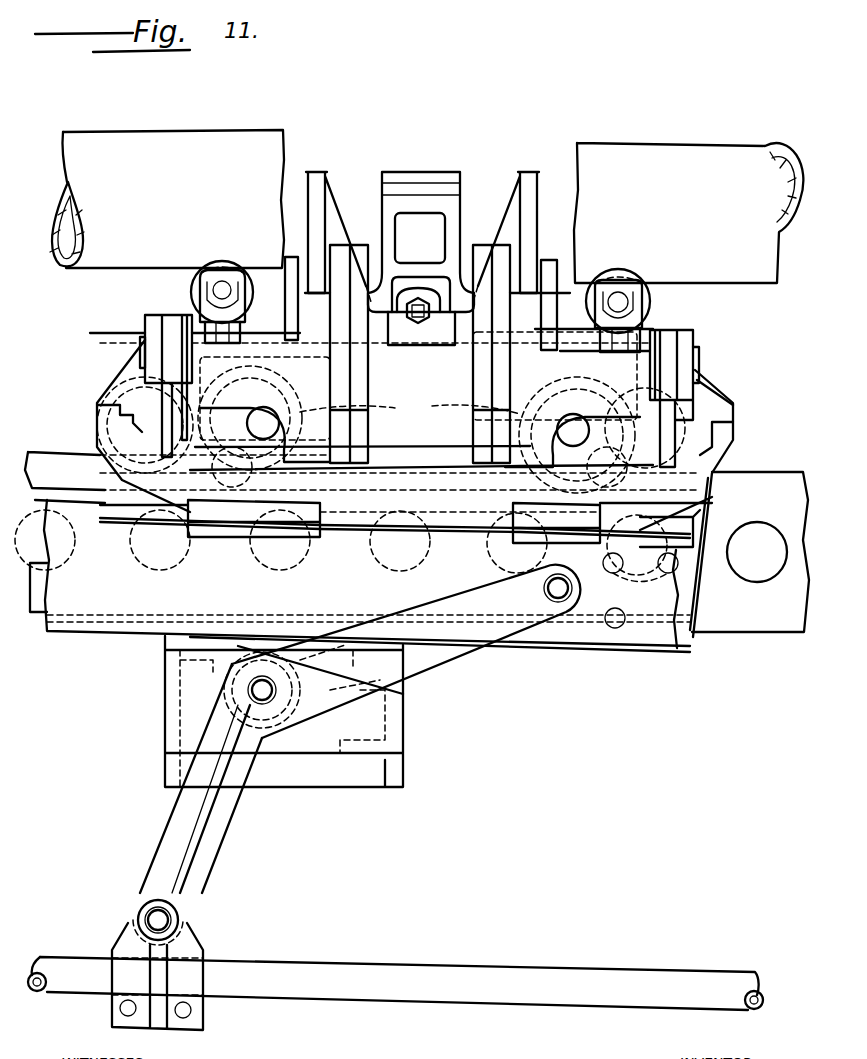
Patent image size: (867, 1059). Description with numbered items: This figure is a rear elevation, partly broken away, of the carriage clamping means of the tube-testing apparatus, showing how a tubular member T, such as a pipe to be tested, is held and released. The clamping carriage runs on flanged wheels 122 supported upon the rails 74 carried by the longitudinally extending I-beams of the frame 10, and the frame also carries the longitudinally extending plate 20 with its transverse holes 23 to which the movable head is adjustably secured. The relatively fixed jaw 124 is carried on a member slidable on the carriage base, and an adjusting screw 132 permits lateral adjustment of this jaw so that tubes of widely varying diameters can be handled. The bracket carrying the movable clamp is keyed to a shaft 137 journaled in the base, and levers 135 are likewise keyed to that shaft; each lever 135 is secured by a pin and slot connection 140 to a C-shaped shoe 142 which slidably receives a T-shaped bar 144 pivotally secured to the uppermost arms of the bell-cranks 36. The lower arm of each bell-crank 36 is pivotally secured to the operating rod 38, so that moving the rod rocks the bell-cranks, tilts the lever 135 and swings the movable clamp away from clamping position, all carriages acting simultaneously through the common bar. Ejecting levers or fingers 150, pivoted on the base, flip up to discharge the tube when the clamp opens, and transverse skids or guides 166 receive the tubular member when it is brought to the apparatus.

The tubular member T is at (113, 130).
The frame 10 is at (72, 638).
The plate 20 is at (750, 570).
The transverse holes 23 is at (742, 568).
The bell-cranks 36 is at (215, 838).
The rod 38 is at (513, 969).
The rails 74 is at (98, 479).
The flanged wheels 122 is at (128, 390).
The fixed jaw 124 is at (418, 196).
The adjusting screw 132 is at (416, 320).
The levers 135 is at (174, 320).
The shaft 137 is at (142, 340).
The pin and slot connection 140 is at (128, 417).
The C-shaped shoe 142 is at (730, 453).
The T-shaped bar 144 is at (112, 590).
The levers or fingers 150 is at (290, 258).
The transverse skids or guides 166 is at (321, 172).